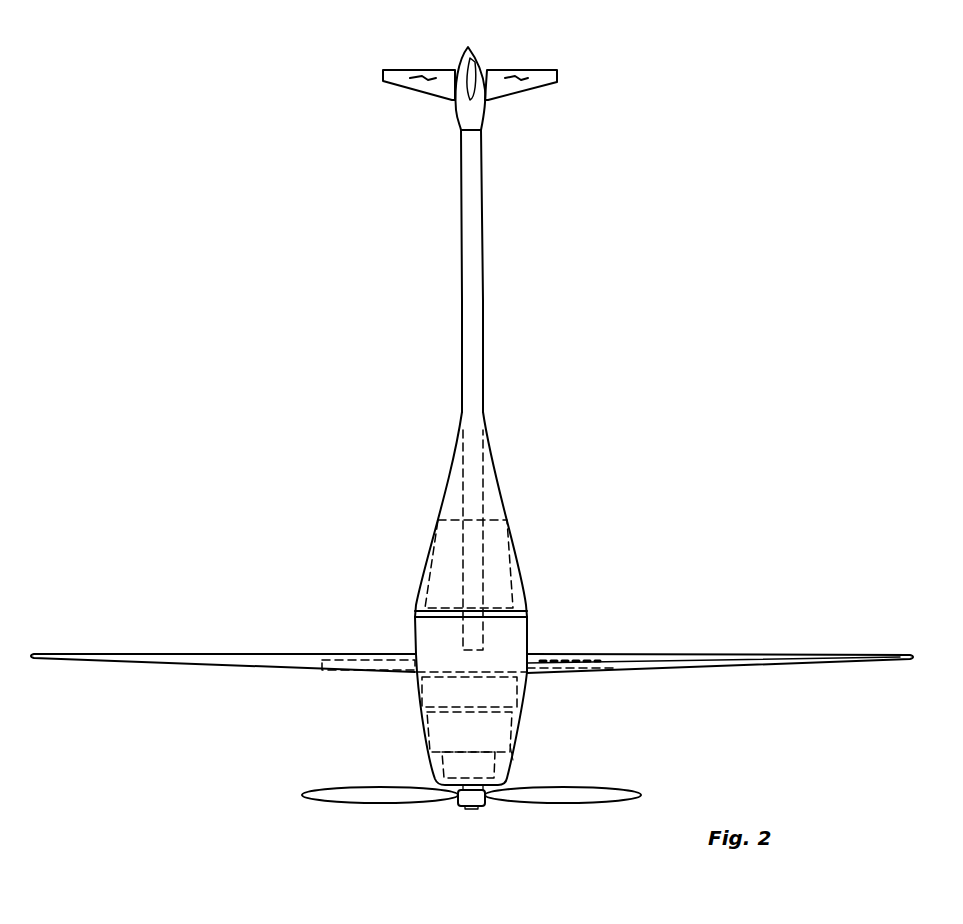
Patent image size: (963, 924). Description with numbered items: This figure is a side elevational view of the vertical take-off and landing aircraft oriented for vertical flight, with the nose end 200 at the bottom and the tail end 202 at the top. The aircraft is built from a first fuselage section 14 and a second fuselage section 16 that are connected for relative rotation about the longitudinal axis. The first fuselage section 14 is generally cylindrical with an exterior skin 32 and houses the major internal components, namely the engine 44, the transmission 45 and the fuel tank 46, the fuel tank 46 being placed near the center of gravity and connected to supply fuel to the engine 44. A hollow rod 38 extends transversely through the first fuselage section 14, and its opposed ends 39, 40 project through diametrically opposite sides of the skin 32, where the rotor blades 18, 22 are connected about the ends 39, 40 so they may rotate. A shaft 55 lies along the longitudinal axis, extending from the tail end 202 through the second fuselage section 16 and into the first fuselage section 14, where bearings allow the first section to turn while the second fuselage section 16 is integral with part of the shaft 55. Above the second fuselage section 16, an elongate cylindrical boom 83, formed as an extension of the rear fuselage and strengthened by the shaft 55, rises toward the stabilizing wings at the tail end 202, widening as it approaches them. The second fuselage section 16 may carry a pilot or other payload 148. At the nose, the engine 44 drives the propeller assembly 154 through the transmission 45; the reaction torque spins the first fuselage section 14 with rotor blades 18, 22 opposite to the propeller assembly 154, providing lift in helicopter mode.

The tail end 202 is at (485, 57).
The boom 83 is at (470, 302).
The second fuselage section 16 is at (509, 494).
The shaft 55 is at (472, 455).
The pilot or payload 148 is at (493, 548).
The rotor blade 18 is at (164, 652).
The rod end 39 is at (320, 660).
The rotor blade 22 is at (730, 653).
The rod 38 is at (580, 660).
The rod end 40 is at (615, 664).
The first fuselage section 14 is at (524, 710).
The fuel tank 46 is at (445, 693).
The engine 44 is at (452, 735).
The transmission 45 is at (435, 768).
The exterior skin 32 is at (514, 752).
The propeller assembly 154 is at (590, 803).
The nose end 200 is at (478, 810).